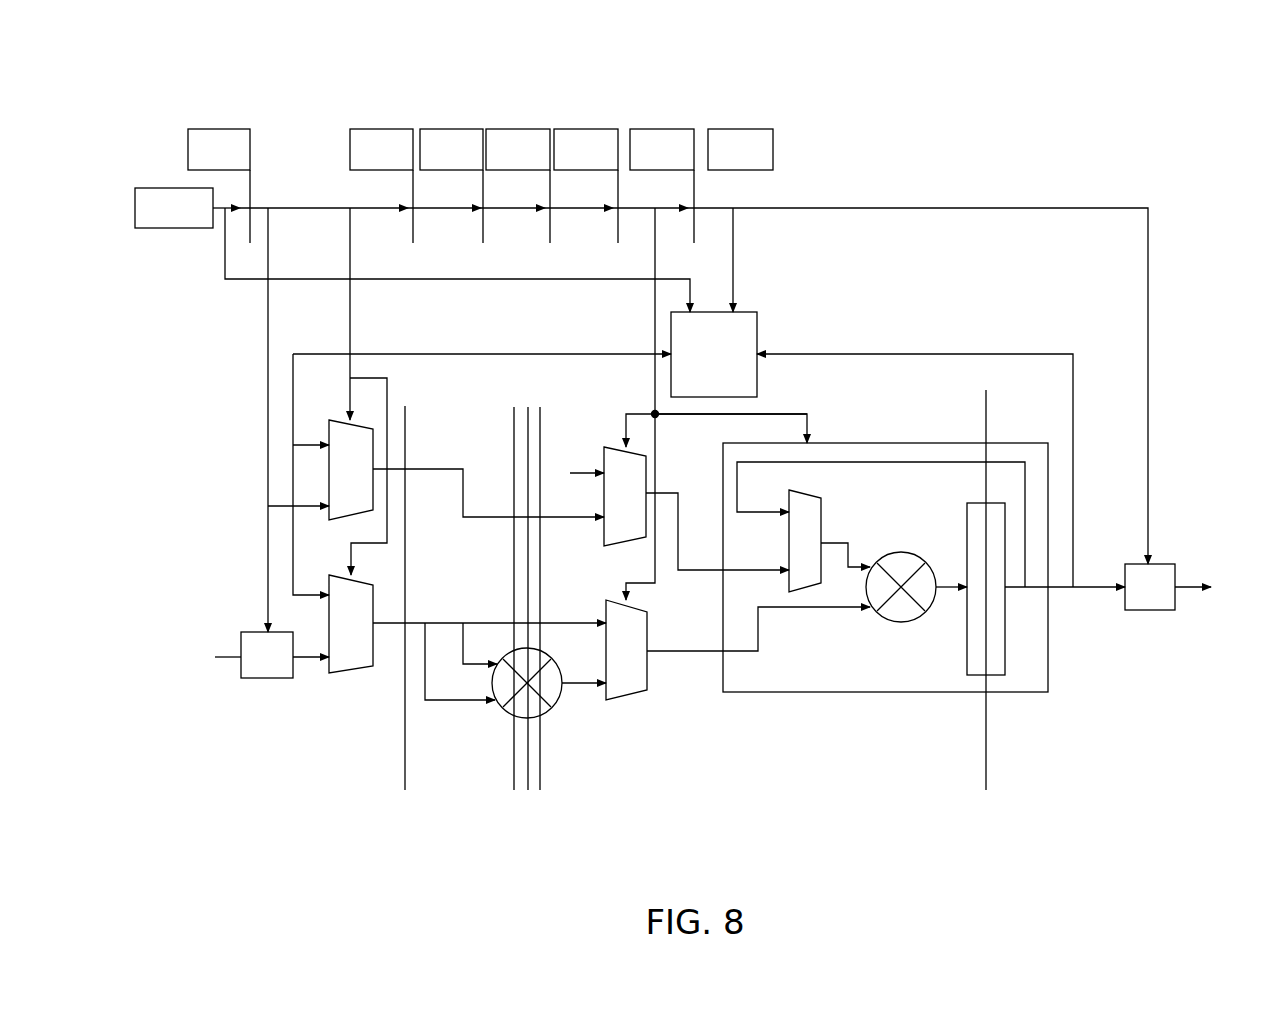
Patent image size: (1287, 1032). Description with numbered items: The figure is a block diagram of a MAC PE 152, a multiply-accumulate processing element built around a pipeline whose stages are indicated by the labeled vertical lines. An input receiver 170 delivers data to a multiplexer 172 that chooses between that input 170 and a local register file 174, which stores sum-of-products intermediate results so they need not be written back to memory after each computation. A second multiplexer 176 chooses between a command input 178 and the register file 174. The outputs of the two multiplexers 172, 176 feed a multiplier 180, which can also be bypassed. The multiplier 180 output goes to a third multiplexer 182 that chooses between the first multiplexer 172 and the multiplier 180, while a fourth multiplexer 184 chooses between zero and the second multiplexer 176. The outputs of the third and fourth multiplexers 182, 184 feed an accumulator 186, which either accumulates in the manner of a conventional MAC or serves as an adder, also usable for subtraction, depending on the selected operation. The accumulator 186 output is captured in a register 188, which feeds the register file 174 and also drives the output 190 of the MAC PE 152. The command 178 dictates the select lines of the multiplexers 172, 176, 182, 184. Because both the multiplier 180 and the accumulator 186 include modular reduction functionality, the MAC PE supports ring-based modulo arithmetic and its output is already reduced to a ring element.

The MAC PE 152 is at (1030, 73).
The input receiver 170 is at (267, 673).
The multiplexer 172 is at (364, 655).
The register file 174 is at (767, 322).
The second multiplexer 176 is at (363, 442).
The input (CMD) 178 is at (135, 200).
The multiplier 180 is at (553, 697).
The third multiplexer 182 is at (633, 687).
The fourth multiplexer 184 is at (617, 458).
The accumulator 186 is at (823, 678).
The register 188 is at (1002, 663).
The output 190 is at (1150, 603).